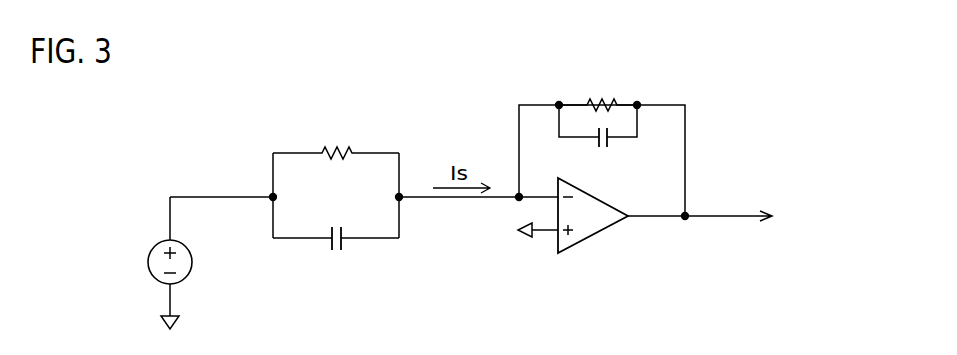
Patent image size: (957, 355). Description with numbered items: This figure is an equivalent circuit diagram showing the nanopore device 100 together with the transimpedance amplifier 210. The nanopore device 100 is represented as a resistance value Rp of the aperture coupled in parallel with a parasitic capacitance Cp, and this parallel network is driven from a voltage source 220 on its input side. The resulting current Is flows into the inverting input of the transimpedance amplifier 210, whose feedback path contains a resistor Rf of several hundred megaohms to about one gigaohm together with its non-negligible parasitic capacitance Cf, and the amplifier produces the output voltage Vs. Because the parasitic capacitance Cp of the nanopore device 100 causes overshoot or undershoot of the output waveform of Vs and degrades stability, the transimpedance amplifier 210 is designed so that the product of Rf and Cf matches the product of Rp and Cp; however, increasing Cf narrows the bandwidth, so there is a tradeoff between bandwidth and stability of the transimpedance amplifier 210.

The voltage source 220 is at (150, 278).
The nanopore device 100 is at (408, 296).
The transimpedance amplifier 210 is at (695, 296).